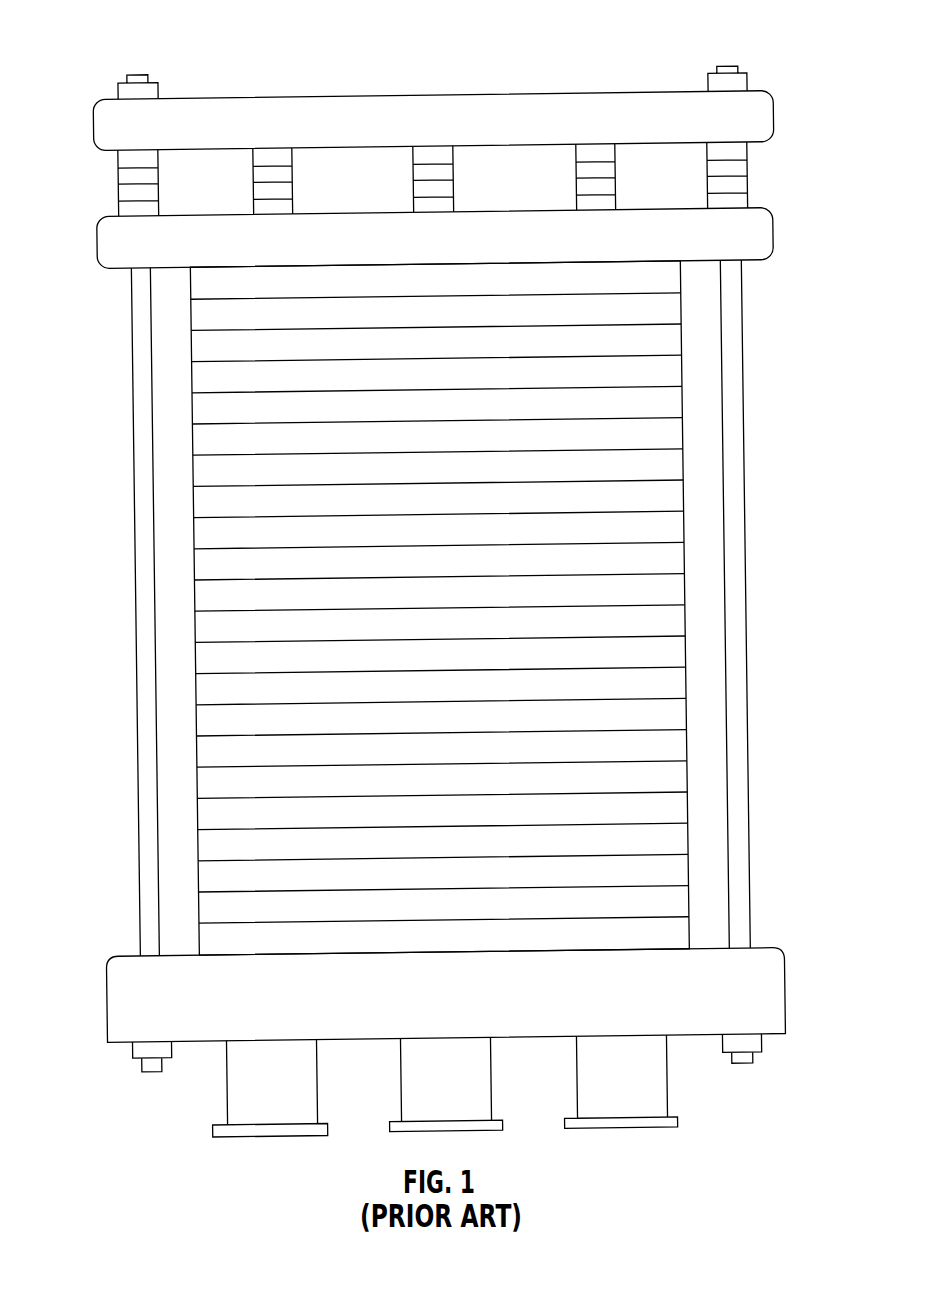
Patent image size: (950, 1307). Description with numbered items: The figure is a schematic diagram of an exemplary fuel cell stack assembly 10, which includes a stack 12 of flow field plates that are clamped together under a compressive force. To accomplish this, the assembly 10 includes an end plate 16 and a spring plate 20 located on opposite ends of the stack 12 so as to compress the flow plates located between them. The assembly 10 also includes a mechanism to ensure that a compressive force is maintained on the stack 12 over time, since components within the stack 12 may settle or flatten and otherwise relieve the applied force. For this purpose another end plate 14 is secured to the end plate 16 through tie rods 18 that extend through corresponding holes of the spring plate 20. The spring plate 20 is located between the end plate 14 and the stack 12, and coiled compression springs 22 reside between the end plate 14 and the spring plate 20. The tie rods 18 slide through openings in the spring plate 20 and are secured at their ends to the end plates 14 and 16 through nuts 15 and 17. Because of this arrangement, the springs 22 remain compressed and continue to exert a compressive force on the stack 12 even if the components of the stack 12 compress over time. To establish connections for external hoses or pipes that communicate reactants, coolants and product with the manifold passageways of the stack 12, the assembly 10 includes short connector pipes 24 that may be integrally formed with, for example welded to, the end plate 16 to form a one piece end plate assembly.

The fuel cell stack assembly 10 is at (586, 77).
The stack 12 is at (509, 607).
The end plate 14 is at (469, 116).
The nuts 15 is at (469, 72).
The end plate 16 is at (481, 995).
The nuts 17 is at (448, 1076).
The tie rods 18 is at (444, 608).
The spring plate 20 is at (401, 244).
The coiled compression springs 22 is at (433, 130).
The pipes 24 is at (413, 1111).